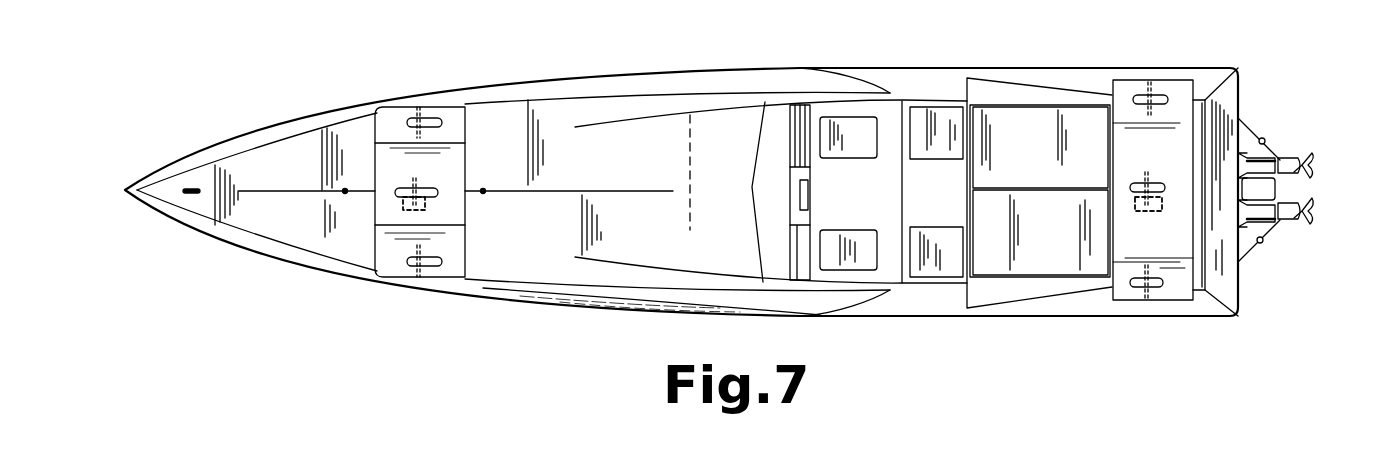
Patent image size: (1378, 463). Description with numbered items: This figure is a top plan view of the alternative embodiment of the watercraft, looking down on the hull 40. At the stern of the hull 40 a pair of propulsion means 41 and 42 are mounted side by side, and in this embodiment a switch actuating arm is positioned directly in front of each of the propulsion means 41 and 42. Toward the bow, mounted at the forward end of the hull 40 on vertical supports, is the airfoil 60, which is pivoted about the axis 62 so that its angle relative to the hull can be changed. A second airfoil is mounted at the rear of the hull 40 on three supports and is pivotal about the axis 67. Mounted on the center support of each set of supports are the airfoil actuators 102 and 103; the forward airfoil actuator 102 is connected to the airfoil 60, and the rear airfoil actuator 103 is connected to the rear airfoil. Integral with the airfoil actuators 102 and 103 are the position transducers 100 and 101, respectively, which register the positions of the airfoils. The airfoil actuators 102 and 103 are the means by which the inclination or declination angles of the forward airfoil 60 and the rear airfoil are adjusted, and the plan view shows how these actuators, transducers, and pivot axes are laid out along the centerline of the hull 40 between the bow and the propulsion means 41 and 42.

The hull 40 is at (800, 62).
The propulsion means 41 is at (1310, 162).
The propulsion means 42 is at (1313, 203).
The airfoil 60 is at (453, 267).
The axis 62 is at (414, 118).
The axis 67 is at (1146, 80).
The position transducer 100 is at (471, 211).
The position transducer 101 is at (1159, 221).
The airfoil actuator 102 is at (428, 202).
The airfoil actuator 103 is at (1163, 205).